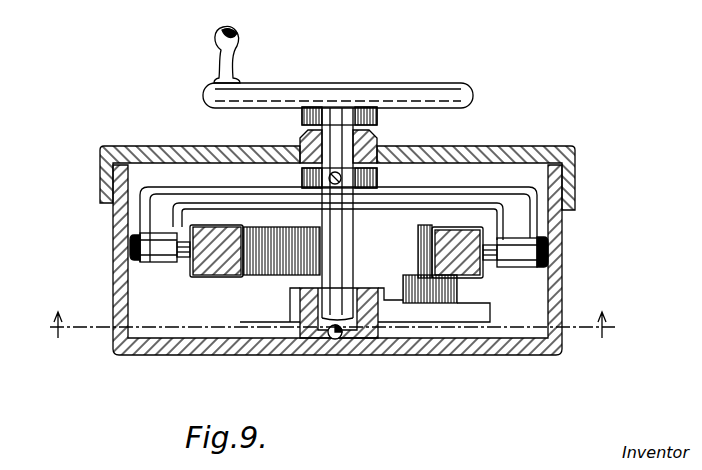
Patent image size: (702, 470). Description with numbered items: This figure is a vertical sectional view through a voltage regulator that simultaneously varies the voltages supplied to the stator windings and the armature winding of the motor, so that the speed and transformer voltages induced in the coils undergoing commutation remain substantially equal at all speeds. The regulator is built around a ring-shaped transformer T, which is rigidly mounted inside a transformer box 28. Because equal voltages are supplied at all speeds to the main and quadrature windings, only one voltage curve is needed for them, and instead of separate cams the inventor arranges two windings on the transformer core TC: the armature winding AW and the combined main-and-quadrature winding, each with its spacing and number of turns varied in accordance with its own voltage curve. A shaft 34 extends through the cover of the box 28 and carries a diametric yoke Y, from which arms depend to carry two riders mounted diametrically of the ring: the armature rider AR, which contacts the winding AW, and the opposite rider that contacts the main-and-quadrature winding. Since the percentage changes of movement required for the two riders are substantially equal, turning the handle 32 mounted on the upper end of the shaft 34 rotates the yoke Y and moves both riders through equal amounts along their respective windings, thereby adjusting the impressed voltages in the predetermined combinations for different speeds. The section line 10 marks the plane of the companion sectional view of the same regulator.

The transformer box 28 is at (557, 296).
The handle 32 is at (370, 90).
The shaft 34 is at (342, 147).
The diametric yoke Y is at (433, 190).
The armature rider AR is at (150, 263).
The armature winding AW is at (223, 278).
The transformer core TC is at (205, 262).
The transformer T is at (482, 290).
The section line 10 is at (335, 325).